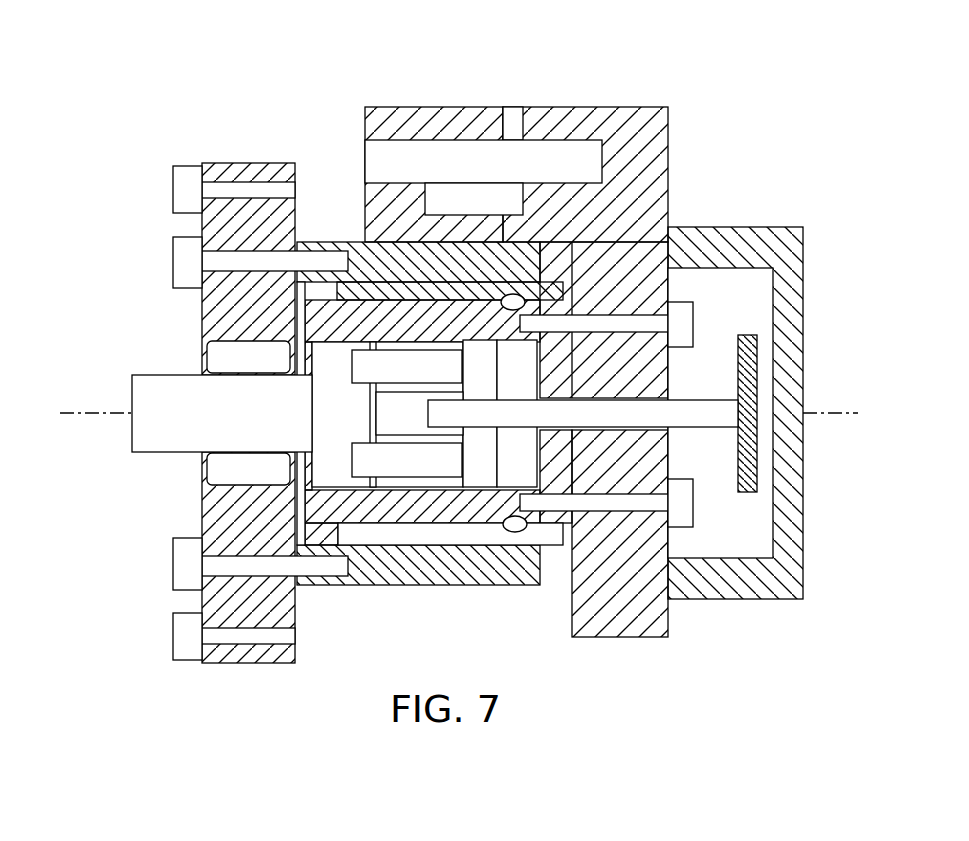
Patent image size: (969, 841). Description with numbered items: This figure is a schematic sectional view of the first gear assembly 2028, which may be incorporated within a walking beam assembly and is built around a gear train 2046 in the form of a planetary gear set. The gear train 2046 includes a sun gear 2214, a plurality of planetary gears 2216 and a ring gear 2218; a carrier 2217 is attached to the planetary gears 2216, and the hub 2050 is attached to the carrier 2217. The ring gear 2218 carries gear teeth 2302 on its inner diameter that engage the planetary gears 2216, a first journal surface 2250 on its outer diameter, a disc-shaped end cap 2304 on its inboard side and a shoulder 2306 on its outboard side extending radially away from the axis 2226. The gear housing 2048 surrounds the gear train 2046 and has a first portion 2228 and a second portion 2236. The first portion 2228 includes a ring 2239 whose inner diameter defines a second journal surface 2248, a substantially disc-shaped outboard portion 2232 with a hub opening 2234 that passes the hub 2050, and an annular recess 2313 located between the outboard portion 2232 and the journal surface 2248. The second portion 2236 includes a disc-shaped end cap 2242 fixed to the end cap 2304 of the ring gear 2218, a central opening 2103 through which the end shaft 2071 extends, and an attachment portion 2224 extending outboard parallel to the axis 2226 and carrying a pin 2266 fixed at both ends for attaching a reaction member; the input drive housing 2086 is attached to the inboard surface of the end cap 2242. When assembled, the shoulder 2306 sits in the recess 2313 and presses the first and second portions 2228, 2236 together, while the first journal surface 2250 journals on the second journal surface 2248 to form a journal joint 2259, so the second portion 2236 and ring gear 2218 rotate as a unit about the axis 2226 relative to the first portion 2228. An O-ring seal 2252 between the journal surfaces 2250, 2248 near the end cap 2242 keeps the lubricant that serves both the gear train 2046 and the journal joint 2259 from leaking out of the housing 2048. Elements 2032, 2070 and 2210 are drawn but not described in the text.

The first gear assembly 2028 is at (253, 60).
The housing 2032 is at (688, 220).
The gear train 2046 is at (353, 331).
The gear housing 2048 is at (517, 567).
The hub 2050 is at (157, 442).
The disk 2070 is at (750, 432).
The end shaft 2071 is at (712, 412).
The input drive housing 2086 is at (706, 228).
The central opening 2103 is at (650, 398).
The lower seal 2210 is at (367, 465).
The sun gear 2214 is at (408, 420).
The planetary gears 2216 is at (367, 370).
The carrier 2217 is at (352, 407).
The ring gear 2218 is at (500, 290).
The attachment portion 2224 is at (557, 117).
The axis 2226 is at (827, 412).
The first portion 2228 is at (285, 158).
The outboard portion 2232 is at (233, 535).
The hub opening 2234 is at (217, 488).
The second portion 2236 is at (653, 95).
The ring 2239 is at (405, 293).
The end cap 2242 is at (610, 608).
The second journal surface 2248 is at (357, 292).
The first journal surface 2250 is at (470, 310).
The seal 2252 is at (668, 143).
The journal joint 2259 is at (383, 236).
The pin 2266 is at (488, 160).
The gear teeth 2302 is at (410, 485).
The end cap 2304 is at (565, 365).
The shoulder 2306 is at (330, 282).
The annular recess 2313 is at (330, 285).